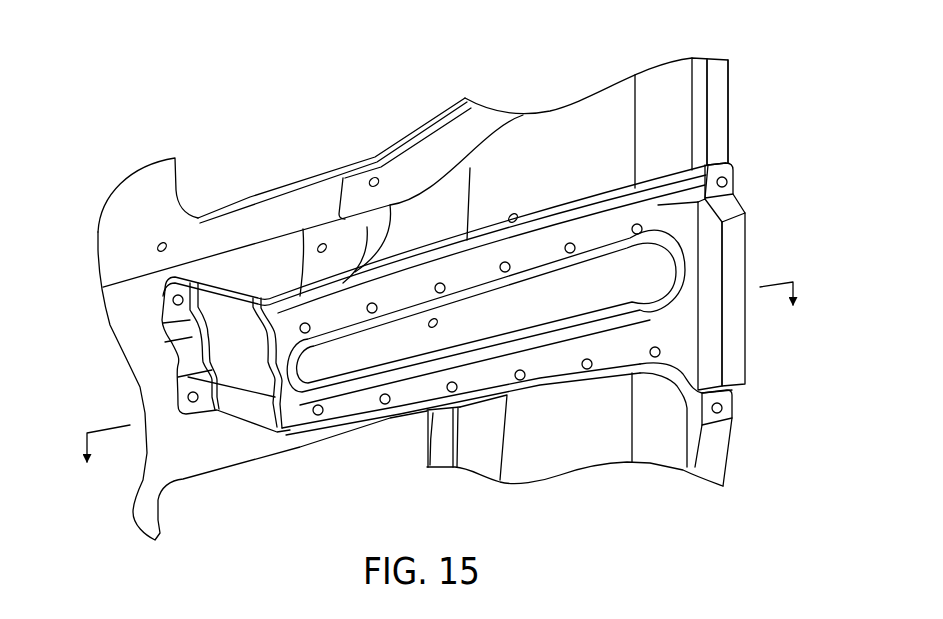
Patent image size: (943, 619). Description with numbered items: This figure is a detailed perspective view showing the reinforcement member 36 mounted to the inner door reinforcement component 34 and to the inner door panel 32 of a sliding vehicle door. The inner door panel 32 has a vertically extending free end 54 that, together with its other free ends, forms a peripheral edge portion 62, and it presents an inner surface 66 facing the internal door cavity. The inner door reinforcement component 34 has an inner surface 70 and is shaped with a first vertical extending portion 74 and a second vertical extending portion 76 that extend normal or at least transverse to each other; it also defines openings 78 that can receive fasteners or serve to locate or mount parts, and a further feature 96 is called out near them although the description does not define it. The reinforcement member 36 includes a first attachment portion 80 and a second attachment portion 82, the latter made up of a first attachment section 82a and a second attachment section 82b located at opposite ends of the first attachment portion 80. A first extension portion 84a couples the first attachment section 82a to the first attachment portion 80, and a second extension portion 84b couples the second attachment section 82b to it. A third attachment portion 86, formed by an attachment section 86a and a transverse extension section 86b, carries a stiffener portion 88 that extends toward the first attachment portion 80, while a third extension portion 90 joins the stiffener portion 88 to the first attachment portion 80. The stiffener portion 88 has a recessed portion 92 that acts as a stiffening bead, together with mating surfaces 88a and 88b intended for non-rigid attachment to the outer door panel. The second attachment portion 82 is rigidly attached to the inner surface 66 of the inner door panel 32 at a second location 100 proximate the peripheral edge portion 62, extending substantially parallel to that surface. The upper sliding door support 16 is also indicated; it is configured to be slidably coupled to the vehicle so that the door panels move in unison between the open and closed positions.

The upper sliding door support 16 is at (441, 392).
The inner door panel 32 is at (133, 210).
The inner door reinforcement component 34 is at (584, 131).
The reinforcement member 36 is at (562, 414).
The vertically extending free end 54 is at (727, 467).
The peripheral edge portion 62 is at (718, 72).
The inner surface 66 is at (262, 220).
The inner surface 70 is at (538, 140).
The first vertical extending portion 74 is at (718, 87).
The second vertical extending portion 76 is at (527, 458).
The openings 78 is at (370, 180).
The first attachment portion 80 is at (746, 252).
The second attachment portion 82 is at (706, 161).
The first attachment section 82a is at (734, 180).
The second attachment section 82b is at (733, 405).
The first extension portion 84a is at (732, 205).
The second extension portion 84b is at (733, 390).
The third attachment portion 86 is at (183, 272).
The attachment section 86a is at (172, 293).
The extension section 86b is at (243, 368).
The stiffener portion 88 is at (547, 212).
The mating surface 88a is at (403, 300).
The mating surface 88b is at (357, 402).
The third extension portion 90 is at (710, 340).
The recessed portion 92 is at (583, 303).
The hole 96 is at (376, 179).
The second location 100 is at (716, 156).